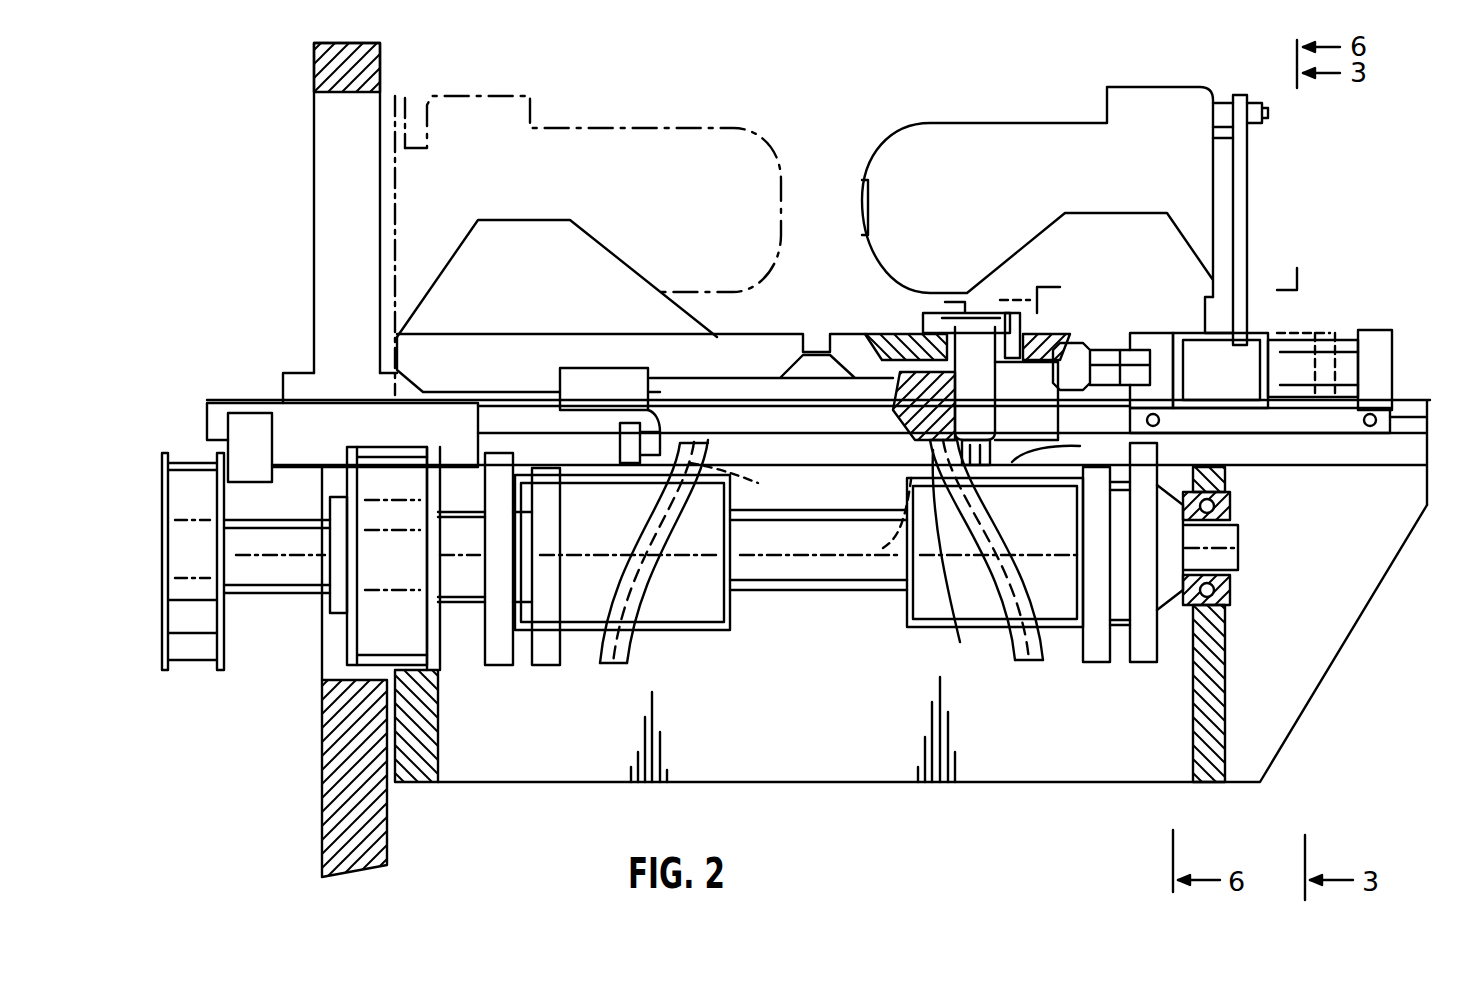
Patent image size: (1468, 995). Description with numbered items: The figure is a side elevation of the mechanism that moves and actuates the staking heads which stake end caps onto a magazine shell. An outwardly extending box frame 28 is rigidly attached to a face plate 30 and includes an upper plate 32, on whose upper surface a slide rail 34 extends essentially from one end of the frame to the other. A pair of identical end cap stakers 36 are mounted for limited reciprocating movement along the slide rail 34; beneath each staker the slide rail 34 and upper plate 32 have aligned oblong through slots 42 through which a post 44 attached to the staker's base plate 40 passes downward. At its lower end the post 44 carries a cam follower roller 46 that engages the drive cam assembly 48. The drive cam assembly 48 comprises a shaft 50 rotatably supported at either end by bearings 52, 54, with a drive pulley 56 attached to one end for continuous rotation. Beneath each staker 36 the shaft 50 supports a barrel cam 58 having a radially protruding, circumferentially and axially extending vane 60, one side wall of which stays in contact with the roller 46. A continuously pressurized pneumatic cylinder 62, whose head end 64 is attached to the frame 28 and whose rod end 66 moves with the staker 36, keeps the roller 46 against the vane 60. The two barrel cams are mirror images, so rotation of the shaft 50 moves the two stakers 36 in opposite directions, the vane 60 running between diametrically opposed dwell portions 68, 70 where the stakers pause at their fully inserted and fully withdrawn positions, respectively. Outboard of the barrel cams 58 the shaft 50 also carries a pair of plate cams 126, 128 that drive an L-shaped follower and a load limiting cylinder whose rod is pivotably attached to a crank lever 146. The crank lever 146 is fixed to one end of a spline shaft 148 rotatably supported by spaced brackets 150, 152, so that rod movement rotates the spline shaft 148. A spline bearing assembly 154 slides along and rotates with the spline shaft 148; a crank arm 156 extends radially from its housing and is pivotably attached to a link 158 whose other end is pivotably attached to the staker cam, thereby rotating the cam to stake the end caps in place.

The box frame 28 is at (812, 710).
The face plate 30 is at (378, 72).
The upper plate 32 is at (835, 448).
The slide rail 34 is at (292, 388).
The end cap staker 36 is at (690, 212).
The base plate 40 is at (890, 335).
The oblong through slot 42 is at (1042, 407).
The post 44 is at (968, 400).
The cam follower roller 46 is at (958, 627).
The drive cam assembly 48 is at (683, 605).
The shaft 50 is at (266, 588).
The bearing 52 is at (372, 630).
The bearing 54 is at (1230, 600).
The drive pulley 56 is at (185, 576).
The barrel cam 58 is at (605, 563).
The vane 60 is at (614, 660).
The pneumatic cylinder 62 is at (210, 437).
The head end 64 is at (242, 463).
The rod end 66 is at (620, 395).
The dwell portion 68 is at (885, 508).
The dwell portion 70 is at (600, 640).
The plate cam 126 is at (556, 536).
The plate cam 128 is at (497, 652).
The crank lever 146 is at (1090, 355).
The spline shaft 148 is at (1300, 348).
The bracket 150 is at (1160, 345).
The bracket 152 is at (1377, 348).
The spline bearing assembly 154 is at (1232, 392).
The crank arm 156 is at (1243, 317).
The link 158 is at (1222, 182).